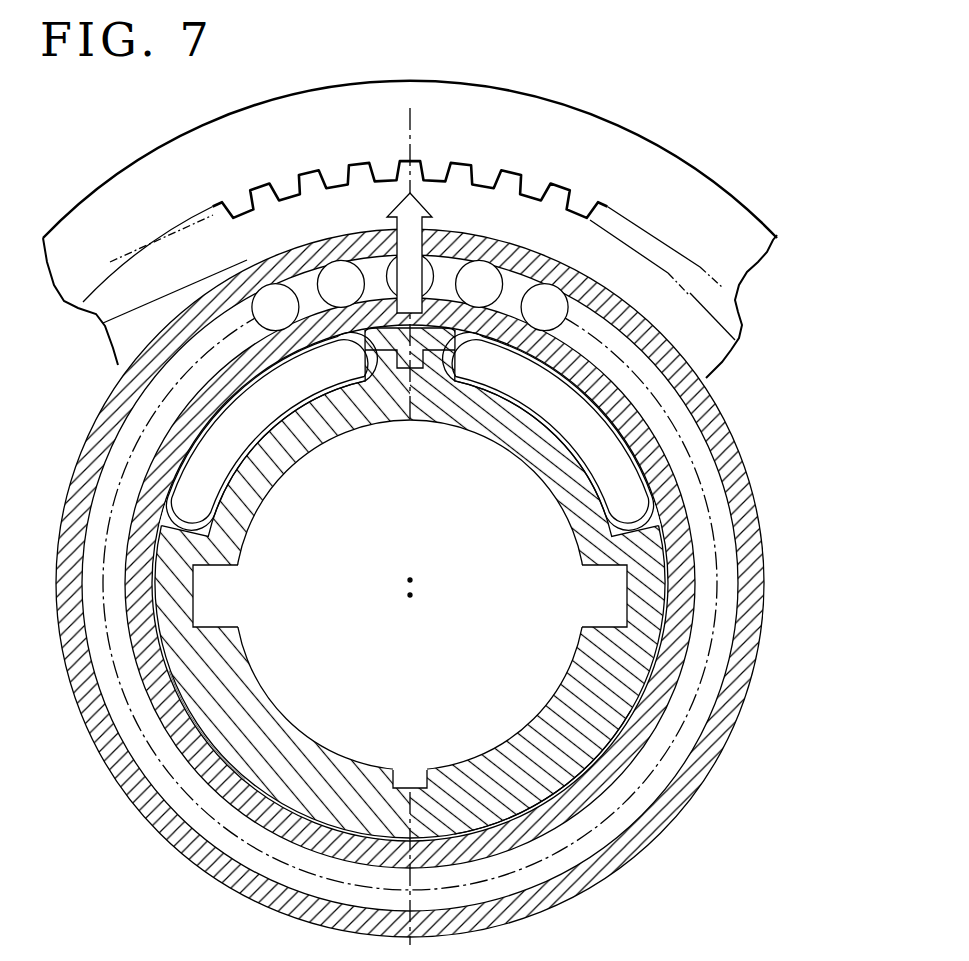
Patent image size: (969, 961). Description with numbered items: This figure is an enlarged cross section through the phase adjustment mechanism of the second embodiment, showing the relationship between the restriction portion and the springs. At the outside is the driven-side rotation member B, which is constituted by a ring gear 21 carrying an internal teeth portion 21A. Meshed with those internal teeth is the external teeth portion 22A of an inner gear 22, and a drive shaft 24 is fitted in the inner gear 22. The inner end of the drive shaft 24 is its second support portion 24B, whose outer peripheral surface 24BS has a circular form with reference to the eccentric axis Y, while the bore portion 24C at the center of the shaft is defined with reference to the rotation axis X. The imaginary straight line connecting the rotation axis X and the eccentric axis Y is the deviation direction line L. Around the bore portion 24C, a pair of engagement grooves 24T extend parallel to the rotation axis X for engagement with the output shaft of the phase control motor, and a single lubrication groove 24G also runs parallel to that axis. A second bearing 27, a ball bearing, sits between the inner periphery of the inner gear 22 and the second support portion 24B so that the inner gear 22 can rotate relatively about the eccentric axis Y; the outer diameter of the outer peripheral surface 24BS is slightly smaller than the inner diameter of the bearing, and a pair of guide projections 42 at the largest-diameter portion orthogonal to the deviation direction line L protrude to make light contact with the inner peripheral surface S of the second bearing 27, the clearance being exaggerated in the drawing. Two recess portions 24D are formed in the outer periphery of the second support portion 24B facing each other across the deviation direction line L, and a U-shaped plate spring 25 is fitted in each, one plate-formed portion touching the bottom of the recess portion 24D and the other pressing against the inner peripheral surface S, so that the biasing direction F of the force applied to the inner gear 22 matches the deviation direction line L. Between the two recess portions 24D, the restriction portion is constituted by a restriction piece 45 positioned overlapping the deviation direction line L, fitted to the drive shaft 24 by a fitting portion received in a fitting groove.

The ring gear 21 is at (693, 128).
The internal teeth portion 21A is at (530, 187).
The inner gear 22 is at (612, 262).
The external teeth portion 22A is at (410, 161).
The drive shaft 24 is at (478, 562).
The second support portion 24B is at (478, 562).
The outer peripheral surface 24BS is at (562, 790).
The bore portion 24C is at (497, 653).
The recess portion 24D is at (232, 458).
The lubrication groove 24G is at (416, 773).
The engagement groove 24T is at (212, 620).
The spring 25 is at (233, 440).
The second bearing 27 is at (132, 792).
The guide projection 42 is at (412, 583).
The restriction piece 45 is at (388, 326).
The driven-side rotation member B is at (410, 229).
The biasing direction F is at (431, 208).
The deviation direction line L is at (413, 151).
The inner peripheral surface S is at (240, 767).
The rotation axis X is at (410, 596).
The eccentric axis Y is at (412, 582).